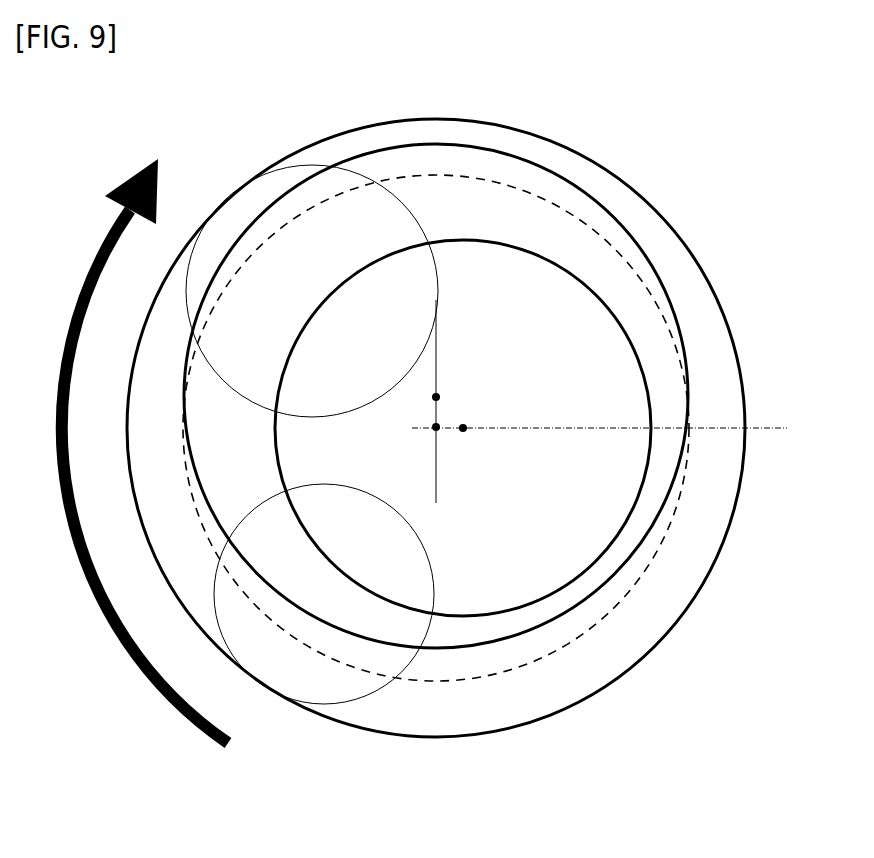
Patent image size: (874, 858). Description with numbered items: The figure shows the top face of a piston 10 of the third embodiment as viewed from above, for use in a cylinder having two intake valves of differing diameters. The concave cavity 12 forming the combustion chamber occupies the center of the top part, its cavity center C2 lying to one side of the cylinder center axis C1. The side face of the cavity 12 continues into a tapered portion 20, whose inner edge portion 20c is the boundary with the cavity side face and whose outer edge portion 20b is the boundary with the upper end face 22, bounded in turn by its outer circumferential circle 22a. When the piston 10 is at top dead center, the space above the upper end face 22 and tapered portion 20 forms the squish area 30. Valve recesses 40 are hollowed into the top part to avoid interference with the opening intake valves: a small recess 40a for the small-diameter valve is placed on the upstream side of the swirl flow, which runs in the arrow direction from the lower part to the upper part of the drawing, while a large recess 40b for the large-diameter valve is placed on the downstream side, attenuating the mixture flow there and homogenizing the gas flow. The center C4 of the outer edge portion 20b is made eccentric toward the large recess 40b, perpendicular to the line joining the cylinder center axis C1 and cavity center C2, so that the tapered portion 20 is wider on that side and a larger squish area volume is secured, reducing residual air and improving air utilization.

The piston 10 is at (708, 232).
The cavity 12 is at (496, 556).
The tapered portion 20 is at (613, 580).
The outer edge portion of the tapered portion 20b is at (546, 616).
The inner edge portion of the tapered portion 20c is at (471, 616).
The upper end face 22 is at (464, 428).
The outer circumferential circle of the upper end face 22a is at (723, 535).
The squish area 30 is at (760, 618).
The valve recesses 40 is at (279, 390).
The small recess 40a is at (216, 578).
The large recess 40b is at (400, 203).
The cylinder center axis C1 is at (436, 427).
The cavity center C2 is at (463, 428).
The center of the outer edge portion C4 is at (436, 397).